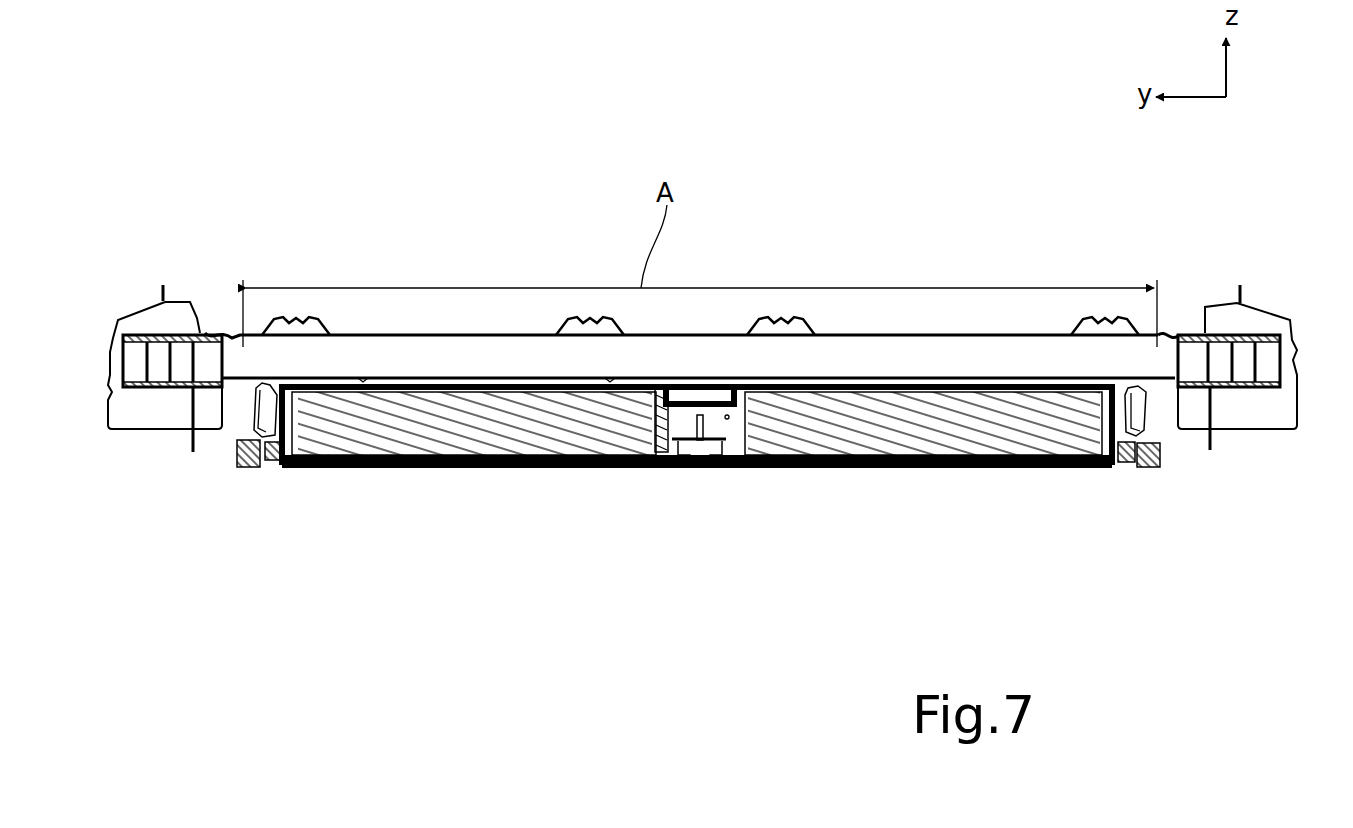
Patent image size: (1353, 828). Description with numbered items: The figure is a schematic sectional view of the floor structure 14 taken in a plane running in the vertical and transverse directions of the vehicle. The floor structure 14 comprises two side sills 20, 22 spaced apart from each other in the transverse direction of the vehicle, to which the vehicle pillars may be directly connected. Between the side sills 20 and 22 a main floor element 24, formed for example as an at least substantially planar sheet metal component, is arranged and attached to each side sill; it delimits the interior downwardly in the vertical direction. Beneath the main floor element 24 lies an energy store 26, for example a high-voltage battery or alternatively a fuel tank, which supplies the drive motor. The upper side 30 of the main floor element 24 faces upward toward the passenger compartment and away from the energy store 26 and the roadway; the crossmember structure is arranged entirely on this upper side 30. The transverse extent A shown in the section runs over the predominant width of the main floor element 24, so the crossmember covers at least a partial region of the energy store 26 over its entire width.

The floor structure 14 is at (879, 438).
The side sill 20 is at (151, 401).
The side sill 22 is at (1248, 413).
The main floor element 24 is at (982, 335).
The energy store 26 is at (509, 428).
The upper side 30 is at (881, 330).